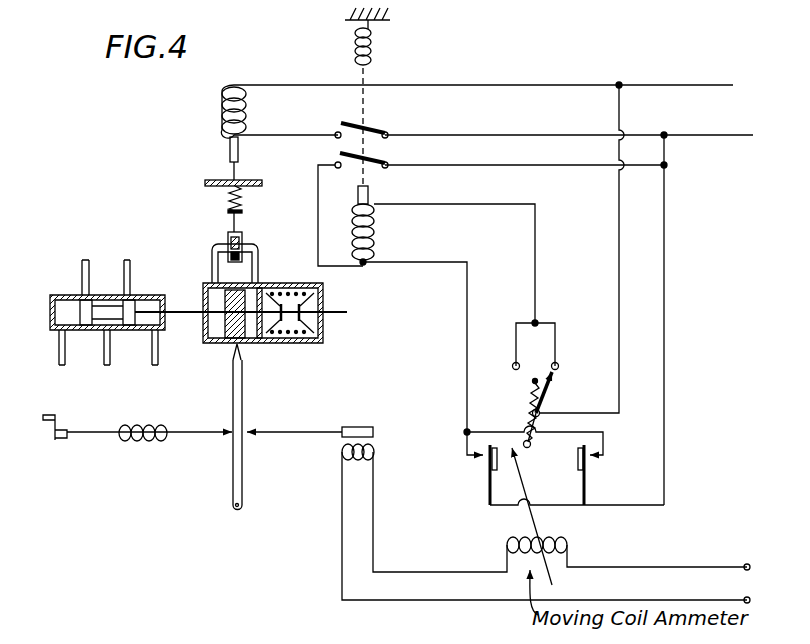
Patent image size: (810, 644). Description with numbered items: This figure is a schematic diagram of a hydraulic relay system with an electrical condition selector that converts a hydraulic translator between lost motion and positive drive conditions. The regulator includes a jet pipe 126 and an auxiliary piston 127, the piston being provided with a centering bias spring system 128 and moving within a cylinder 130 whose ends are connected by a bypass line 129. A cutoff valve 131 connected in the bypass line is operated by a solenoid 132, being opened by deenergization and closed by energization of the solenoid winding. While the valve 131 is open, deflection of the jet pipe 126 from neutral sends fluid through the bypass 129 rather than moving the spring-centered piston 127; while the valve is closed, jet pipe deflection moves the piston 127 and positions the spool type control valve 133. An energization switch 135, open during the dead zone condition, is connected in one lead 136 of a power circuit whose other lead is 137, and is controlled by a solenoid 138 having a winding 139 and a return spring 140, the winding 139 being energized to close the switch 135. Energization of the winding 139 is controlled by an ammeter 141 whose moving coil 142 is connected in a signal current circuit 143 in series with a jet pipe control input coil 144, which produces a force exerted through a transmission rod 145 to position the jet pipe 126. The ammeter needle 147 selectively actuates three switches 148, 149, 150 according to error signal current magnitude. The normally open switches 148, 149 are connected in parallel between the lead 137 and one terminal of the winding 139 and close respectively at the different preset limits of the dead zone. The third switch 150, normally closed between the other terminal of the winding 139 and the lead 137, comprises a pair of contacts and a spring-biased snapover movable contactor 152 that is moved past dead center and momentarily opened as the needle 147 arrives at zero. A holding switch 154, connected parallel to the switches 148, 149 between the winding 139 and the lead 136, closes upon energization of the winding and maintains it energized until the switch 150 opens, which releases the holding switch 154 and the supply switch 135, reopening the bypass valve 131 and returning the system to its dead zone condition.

The jet pipe 126 is at (243, 405).
The auxiliary piston 127 is at (262, 296).
The centering bias spring system 128 is at (300, 340).
The bypass line 129 is at (262, 258).
The cylinder 130 is at (205, 300).
The cutoff valve 131 is at (228, 240).
The solenoid 132 is at (222, 124).
The spool type control valve 133 is at (64, 291).
The energization switch 135 is at (370, 128).
The lead 136 is at (580, 105).
The lead 137 is at (621, 100).
The solenoid 138 is at (377, 229).
The winding 139 is at (376, 251).
The return spring 140 is at (371, 50).
The ammeter 141 is at (580, 548).
The moving coil 142 is at (507, 546).
The signal current circuit 143 is at (708, 560).
The jet pipe control input coil 144 is at (360, 462).
The transmission rod 145 is at (302, 440).
The needle 147 is at (527, 500).
The switch 148 is at (484, 465).
The switch 149 is at (590, 461).
The third switch 150 is at (524, 368).
The movable contactor 152 is at (545, 383).
The holding switch 154 is at (372, 160).